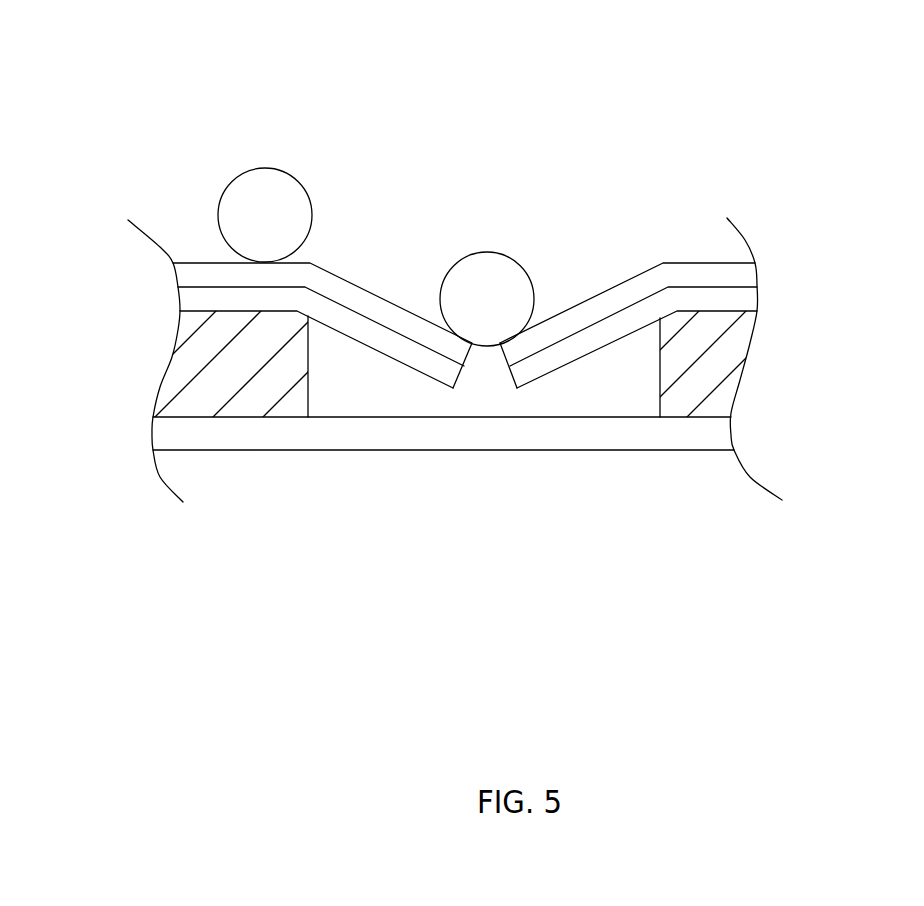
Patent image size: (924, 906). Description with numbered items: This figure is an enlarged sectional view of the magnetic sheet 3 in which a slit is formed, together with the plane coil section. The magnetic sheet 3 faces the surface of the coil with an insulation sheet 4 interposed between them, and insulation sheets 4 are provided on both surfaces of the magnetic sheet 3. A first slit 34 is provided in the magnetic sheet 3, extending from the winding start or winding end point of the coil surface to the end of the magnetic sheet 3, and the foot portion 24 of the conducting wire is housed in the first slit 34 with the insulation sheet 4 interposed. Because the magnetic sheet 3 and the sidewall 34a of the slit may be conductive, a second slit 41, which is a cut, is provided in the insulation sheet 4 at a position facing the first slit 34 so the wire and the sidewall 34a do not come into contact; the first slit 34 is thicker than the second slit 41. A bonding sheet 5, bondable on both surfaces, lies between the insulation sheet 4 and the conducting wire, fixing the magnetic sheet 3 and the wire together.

The magnetic sheet 3 is at (693, 390).
The insulation sheet 4 is at (542, 359).
The bonding sheet 5 is at (683, 275).
The foot portion 24 is at (503, 270).
The first slit 34 is at (547, 397).
The sidewall 34a is at (288, 372).
The second slit 41 is at (495, 372).